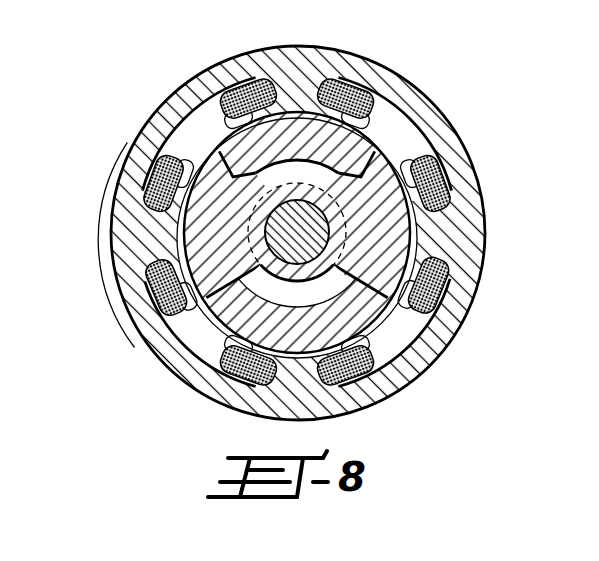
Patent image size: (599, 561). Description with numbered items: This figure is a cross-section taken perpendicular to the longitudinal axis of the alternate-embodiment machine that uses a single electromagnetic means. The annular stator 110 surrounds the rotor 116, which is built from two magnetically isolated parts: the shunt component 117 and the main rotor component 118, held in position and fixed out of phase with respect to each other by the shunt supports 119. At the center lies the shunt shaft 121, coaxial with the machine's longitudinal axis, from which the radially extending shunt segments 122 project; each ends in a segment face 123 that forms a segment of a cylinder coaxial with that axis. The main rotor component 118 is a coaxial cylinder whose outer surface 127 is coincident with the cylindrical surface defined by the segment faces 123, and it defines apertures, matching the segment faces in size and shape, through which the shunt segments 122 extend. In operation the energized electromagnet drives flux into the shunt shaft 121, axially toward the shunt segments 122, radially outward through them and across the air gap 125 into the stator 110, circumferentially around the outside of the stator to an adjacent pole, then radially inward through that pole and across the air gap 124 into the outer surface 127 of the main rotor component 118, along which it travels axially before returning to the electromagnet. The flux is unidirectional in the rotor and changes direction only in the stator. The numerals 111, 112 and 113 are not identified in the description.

The annular stator 110 is at (458, 173).
The housing body 111 is at (452, 246).
The chamber 112 is at (442, 297).
The seal 113 is at (250, 90).
The rotor 116 is at (319, 189).
The shunt component 117 is at (211, 227).
The main rotor component 118 is at (210, 128).
The shunt supports 119 is at (385, 135).
The shunt shaft 121 is at (297, 288).
The shunt segments 122 is at (445, 222).
The segment face 123 is at (183, 252).
The air gap 124 is at (222, 372).
The air gap 125 is at (200, 368).
The outer surface 127 is at (377, 84).